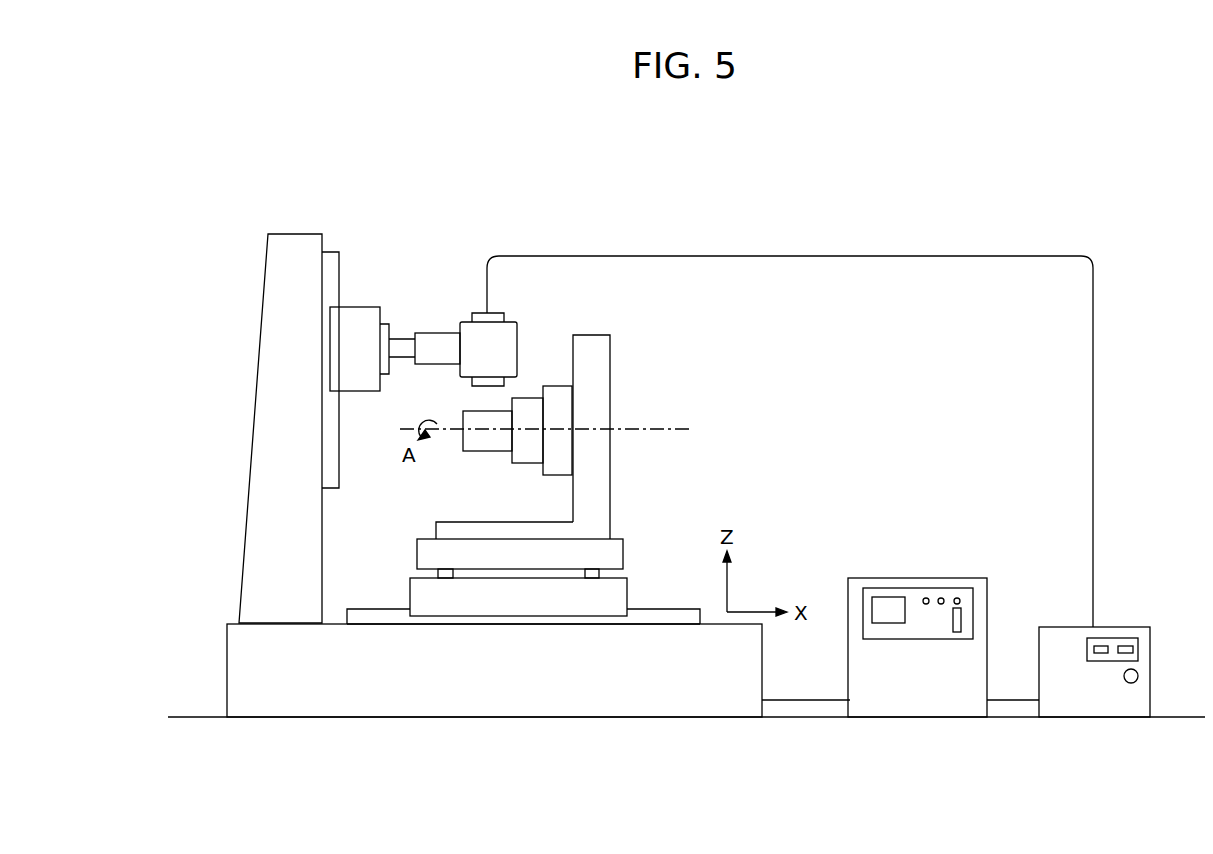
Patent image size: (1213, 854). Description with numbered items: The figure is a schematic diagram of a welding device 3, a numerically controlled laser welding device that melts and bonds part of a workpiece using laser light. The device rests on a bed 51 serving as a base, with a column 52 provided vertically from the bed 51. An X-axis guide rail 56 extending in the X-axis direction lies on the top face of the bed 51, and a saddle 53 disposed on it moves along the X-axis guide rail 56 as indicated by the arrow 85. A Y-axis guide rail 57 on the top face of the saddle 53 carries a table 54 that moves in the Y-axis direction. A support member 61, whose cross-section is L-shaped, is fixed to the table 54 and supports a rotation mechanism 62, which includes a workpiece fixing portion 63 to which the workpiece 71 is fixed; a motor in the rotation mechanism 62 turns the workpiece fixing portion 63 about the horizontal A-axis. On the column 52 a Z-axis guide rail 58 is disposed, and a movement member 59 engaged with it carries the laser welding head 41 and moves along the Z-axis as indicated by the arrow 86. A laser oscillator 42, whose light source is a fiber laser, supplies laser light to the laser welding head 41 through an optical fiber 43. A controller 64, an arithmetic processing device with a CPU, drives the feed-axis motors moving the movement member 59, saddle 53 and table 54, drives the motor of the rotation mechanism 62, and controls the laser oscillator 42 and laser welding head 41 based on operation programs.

The welding device 3 is at (672, 200).
The laser welding head 41 is at (503, 338).
The laser oscillator 42 is at (1096, 700).
The optical fiber 43 is at (1093, 355).
The bed 51 is at (722, 702).
The column 52 is at (267, 524).
The saddle 53 is at (489, 593).
The table 54 is at (538, 553).
The X-axis guide rail 56 is at (657, 617).
The Y-axis guide rail 57 is at (447, 578).
The Z-axis guide rail 58 is at (327, 461).
The movement member 59 is at (345, 355).
The support member 61 is at (595, 514).
The rotation mechanism 62 is at (555, 463).
The workpiece fixing portion 63 is at (532, 410).
The controller 64 is at (927, 700).
The workpiece 71 is at (487, 442).
The arrow 85 is at (399, 642).
The arrow 86 is at (364, 290).